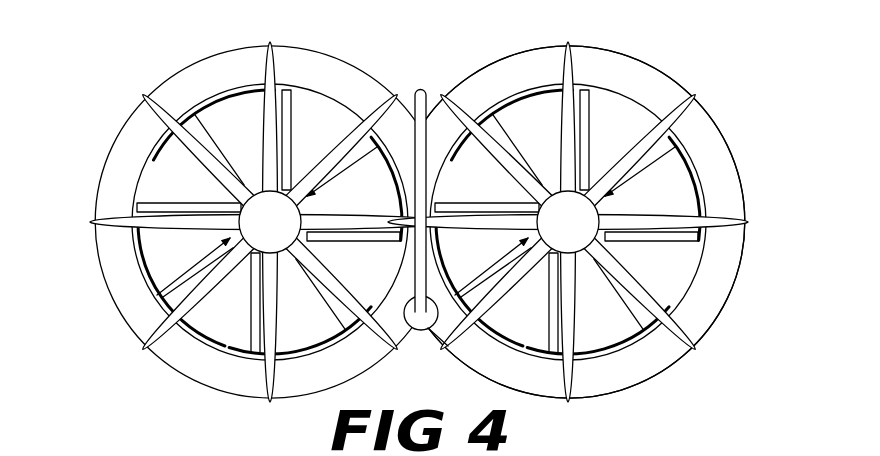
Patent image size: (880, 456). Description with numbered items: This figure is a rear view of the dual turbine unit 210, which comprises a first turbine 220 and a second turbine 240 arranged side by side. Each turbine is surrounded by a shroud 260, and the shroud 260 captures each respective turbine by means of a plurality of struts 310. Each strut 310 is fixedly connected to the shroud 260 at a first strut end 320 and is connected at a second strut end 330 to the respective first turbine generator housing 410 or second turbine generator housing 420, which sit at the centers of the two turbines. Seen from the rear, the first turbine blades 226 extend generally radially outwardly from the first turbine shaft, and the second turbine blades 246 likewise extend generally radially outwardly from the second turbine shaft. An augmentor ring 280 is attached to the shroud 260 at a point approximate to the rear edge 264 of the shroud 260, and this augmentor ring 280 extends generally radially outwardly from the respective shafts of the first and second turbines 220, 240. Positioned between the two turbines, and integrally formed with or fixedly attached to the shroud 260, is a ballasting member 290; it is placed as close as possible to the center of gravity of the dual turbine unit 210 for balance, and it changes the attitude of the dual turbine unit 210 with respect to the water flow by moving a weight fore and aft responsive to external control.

The dual turbine unit 210 is at (152, 47).
The first turbine 220 is at (697, 388).
The first turbine blades 226 is at (508, 134).
The second turbine 240 is at (163, 390).
The second turbine blades 246 is at (212, 134).
The shroud 260 is at (718, 316).
The rear edge 264 is at (710, 270).
The augmentor ring 280 is at (352, 83).
The ballasting member 290 is at (420, 331).
The struts 310 is at (157, 216).
The first strut end 320 is at (115, 228).
The second strut end 330 is at (160, 293).
The first turbine generator housing 410 is at (547, 236).
The second turbine generator housing 420 is at (249, 236).